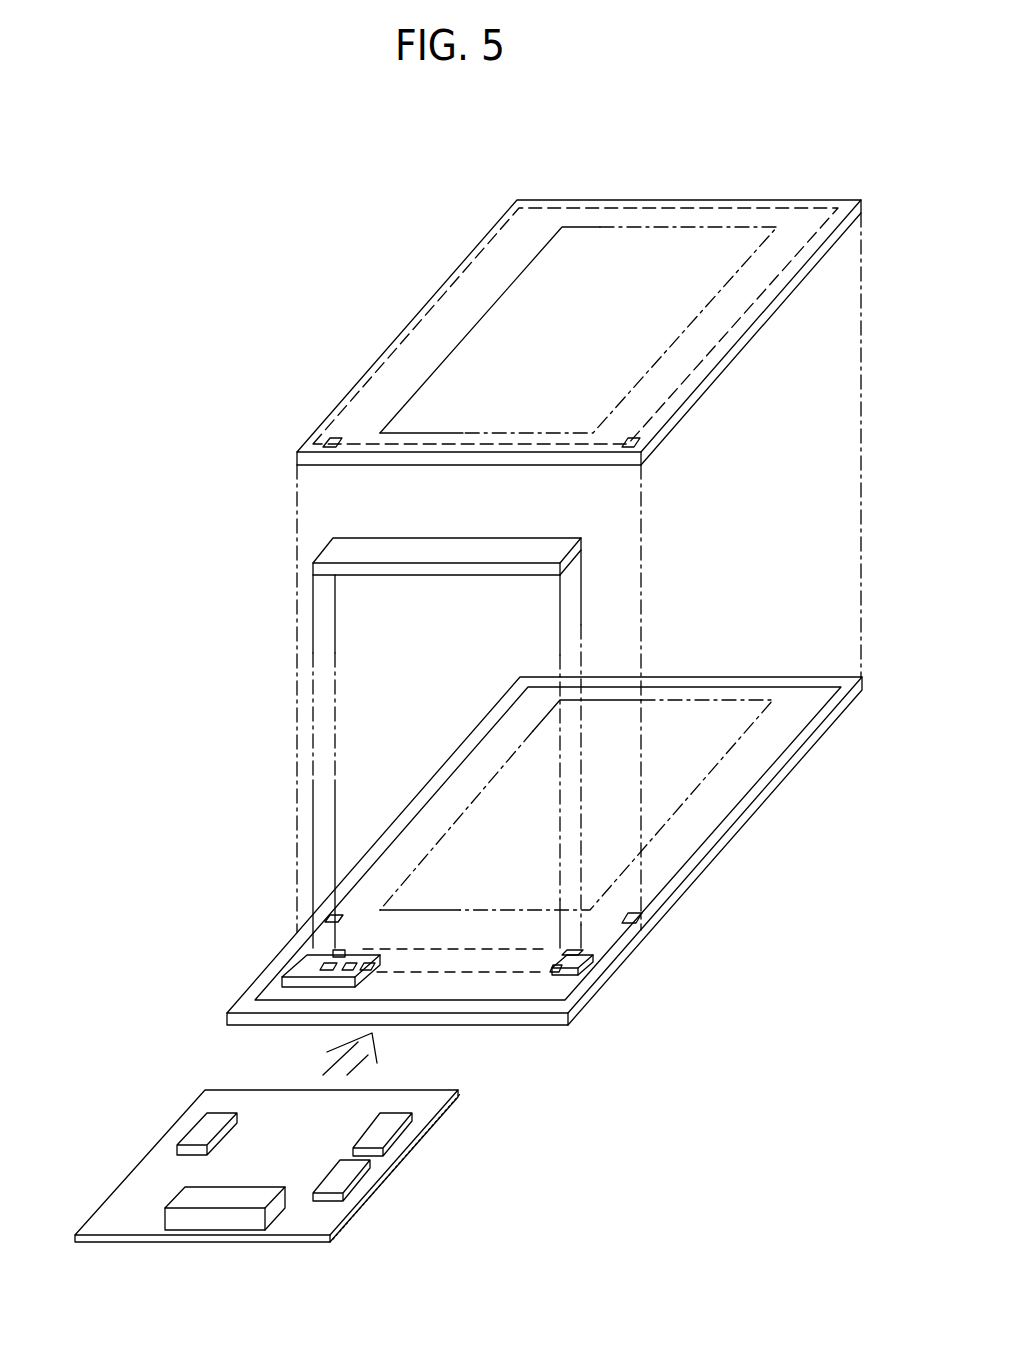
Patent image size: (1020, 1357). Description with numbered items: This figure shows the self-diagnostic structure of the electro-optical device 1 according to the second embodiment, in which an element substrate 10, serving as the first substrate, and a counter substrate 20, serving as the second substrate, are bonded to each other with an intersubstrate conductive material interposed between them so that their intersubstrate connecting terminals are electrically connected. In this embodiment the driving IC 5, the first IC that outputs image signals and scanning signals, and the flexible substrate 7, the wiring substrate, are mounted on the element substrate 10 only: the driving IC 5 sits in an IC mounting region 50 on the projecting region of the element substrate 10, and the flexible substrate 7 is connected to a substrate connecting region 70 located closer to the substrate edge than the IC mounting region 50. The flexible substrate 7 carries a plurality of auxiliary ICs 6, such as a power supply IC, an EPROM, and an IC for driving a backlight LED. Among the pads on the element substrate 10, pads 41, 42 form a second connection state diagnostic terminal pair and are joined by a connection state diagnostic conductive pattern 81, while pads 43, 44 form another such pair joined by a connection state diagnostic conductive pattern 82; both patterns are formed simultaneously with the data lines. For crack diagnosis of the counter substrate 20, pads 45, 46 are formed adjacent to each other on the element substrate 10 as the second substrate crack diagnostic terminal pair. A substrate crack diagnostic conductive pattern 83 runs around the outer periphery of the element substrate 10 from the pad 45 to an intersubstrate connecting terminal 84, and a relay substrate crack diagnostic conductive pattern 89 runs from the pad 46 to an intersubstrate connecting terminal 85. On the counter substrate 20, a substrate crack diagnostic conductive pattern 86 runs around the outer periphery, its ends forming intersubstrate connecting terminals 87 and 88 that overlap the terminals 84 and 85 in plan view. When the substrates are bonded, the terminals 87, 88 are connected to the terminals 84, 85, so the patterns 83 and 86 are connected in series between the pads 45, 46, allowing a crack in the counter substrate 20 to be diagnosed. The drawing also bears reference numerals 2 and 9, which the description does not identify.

The electro-optical device 1 is at (273, 238).
The display panel 2 is at (590, 226).
The driving IC 5 is at (413, 539).
The auxiliary ICs 6 is at (362, 1138).
The flexible substrate 7 is at (372, 1189).
The electronic component 9 is at (188, 1198).
The element substrate 10 is at (827, 734).
The counter substrate 20 is at (760, 198).
The pad 41 is at (352, 935).
The pad 42 is at (333, 927).
The pad 43 is at (556, 953).
The pad 44 is at (571, 1013).
The pad 45 is at (370, 966).
The pad 46 is at (381, 910).
The IC mounting region 50 is at (473, 962).
The substrate connecting region 70 is at (565, 1026).
The connection state diagnostic conductive pattern 81 is at (317, 960).
The connection state diagnostic conductive pattern 82 is at (584, 964).
The substrate crack diagnostic conductive pattern 83 is at (774, 771).
The intersubstrate connecting terminal 84 is at (641, 917).
The intersubstrate connecting terminal 85 is at (333, 893).
The substrate crack diagnostic conductive pattern 86 is at (637, 205).
The intersubstrate connecting terminal 87 is at (640, 464).
The intersubstrate connecting terminal 88 is at (330, 436).
The substrate crack diagnostic conductive pattern for relay 89 is at (326, 918).